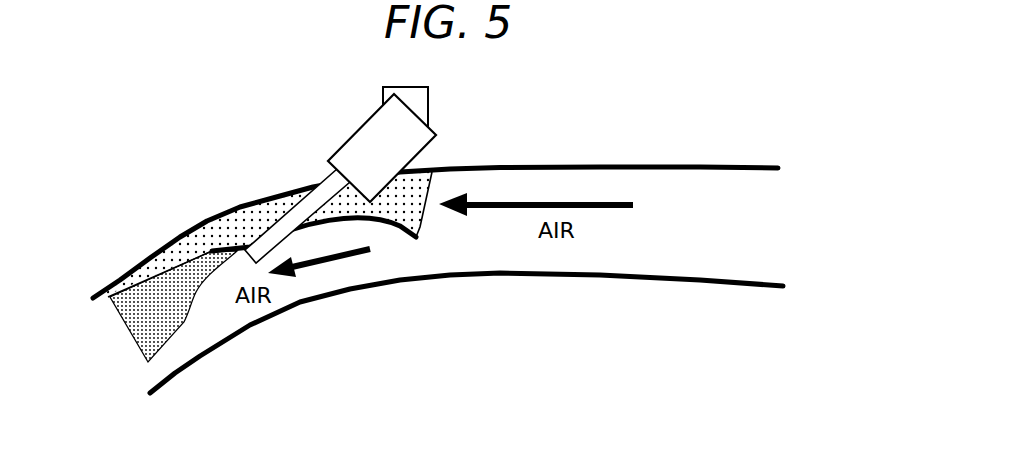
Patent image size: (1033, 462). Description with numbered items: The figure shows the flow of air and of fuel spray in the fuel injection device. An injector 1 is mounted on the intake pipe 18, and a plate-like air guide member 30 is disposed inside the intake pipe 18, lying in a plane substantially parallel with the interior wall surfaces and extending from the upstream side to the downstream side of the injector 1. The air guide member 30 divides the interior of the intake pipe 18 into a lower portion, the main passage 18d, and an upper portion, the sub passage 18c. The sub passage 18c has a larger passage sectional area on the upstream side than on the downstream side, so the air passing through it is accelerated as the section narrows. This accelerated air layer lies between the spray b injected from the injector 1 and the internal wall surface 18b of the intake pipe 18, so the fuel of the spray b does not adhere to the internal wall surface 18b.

The injector 1 is at (367, 138).
The intake pipe 18 is at (585, 166).
The internal wall surface 18b is at (146, 256).
The upper portion (sub passage) 18c is at (252, 218).
The lower portion (main passage) 18d is at (345, 268).
The air guide member 30 is at (410, 237).
The spray b is at (177, 323).